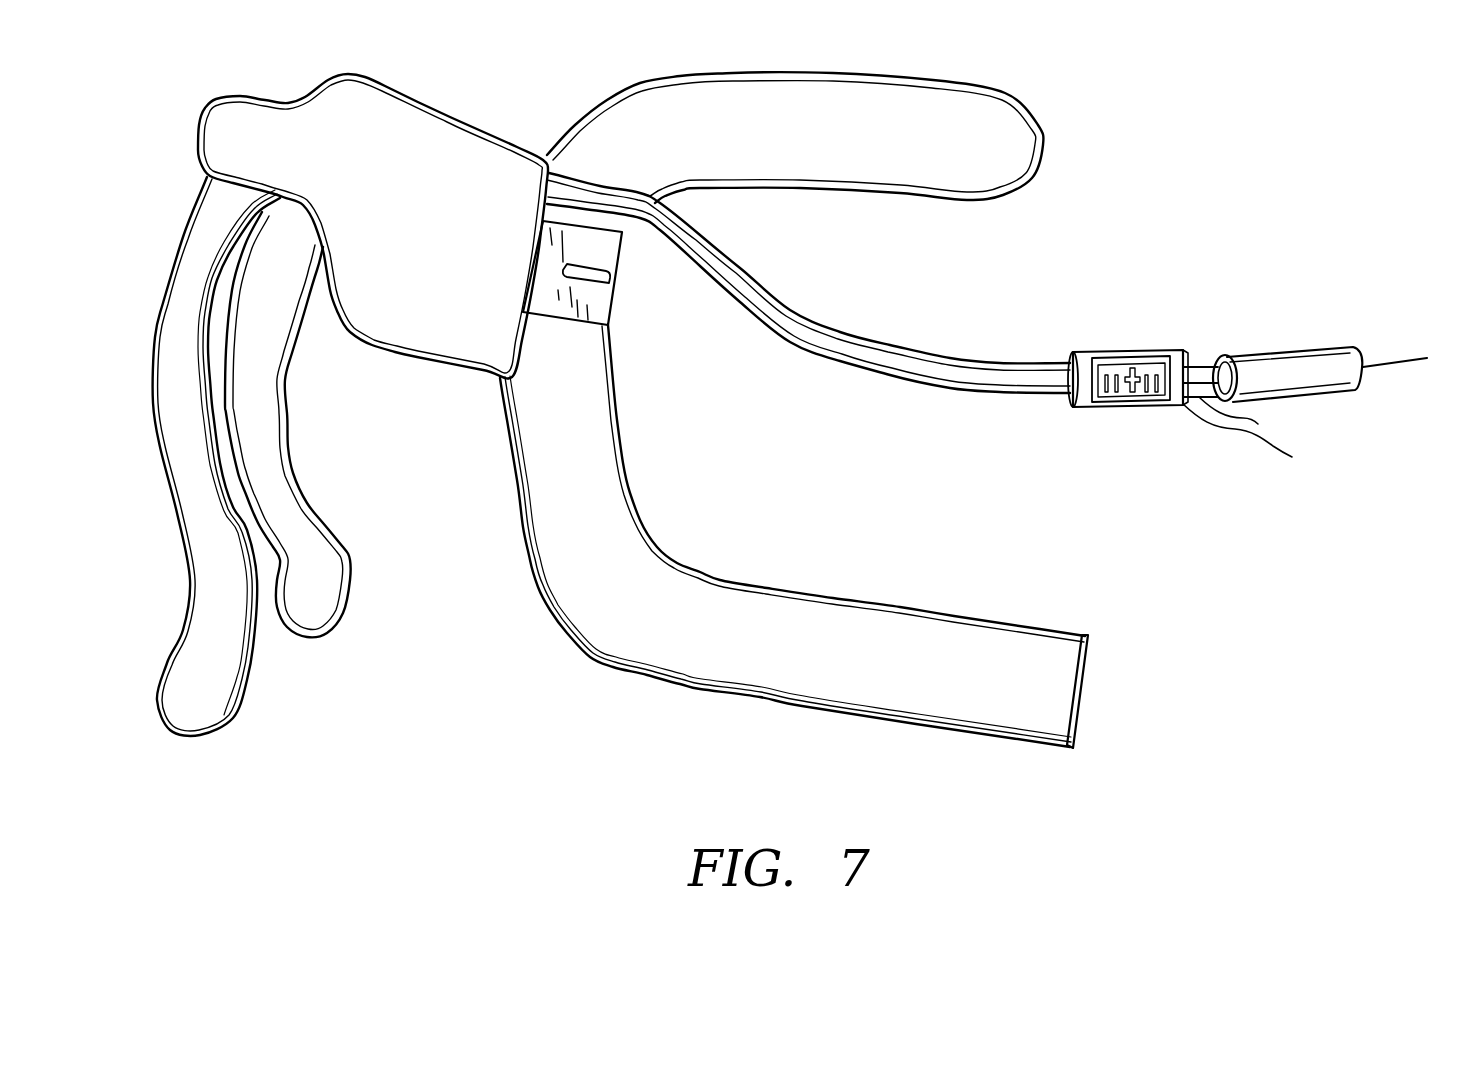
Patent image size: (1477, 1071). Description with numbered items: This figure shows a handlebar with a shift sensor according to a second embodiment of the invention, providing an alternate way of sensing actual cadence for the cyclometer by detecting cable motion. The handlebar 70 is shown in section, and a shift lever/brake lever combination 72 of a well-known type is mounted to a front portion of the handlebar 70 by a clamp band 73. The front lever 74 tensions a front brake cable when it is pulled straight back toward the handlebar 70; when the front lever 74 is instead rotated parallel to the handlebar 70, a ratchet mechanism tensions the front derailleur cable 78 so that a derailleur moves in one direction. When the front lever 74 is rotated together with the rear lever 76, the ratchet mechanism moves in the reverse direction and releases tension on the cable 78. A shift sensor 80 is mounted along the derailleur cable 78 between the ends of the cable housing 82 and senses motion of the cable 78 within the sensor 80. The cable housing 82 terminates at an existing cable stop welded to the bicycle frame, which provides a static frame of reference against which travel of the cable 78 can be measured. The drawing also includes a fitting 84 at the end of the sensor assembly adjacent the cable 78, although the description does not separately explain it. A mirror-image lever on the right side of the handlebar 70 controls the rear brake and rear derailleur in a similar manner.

The handlebar 70 is at (953, 618).
The shift lever/brake lever combination 72 is at (400, 104).
The clamp band 73 is at (601, 303).
The front lever 74 is at (217, 708).
The rear lever 76 is at (353, 578).
The front derailleur cable 78 is at (1403, 351).
The shift sensor 80 is at (1120, 352).
The cable housing 82 is at (807, 318).
The end fitting 84 is at (1258, 354).